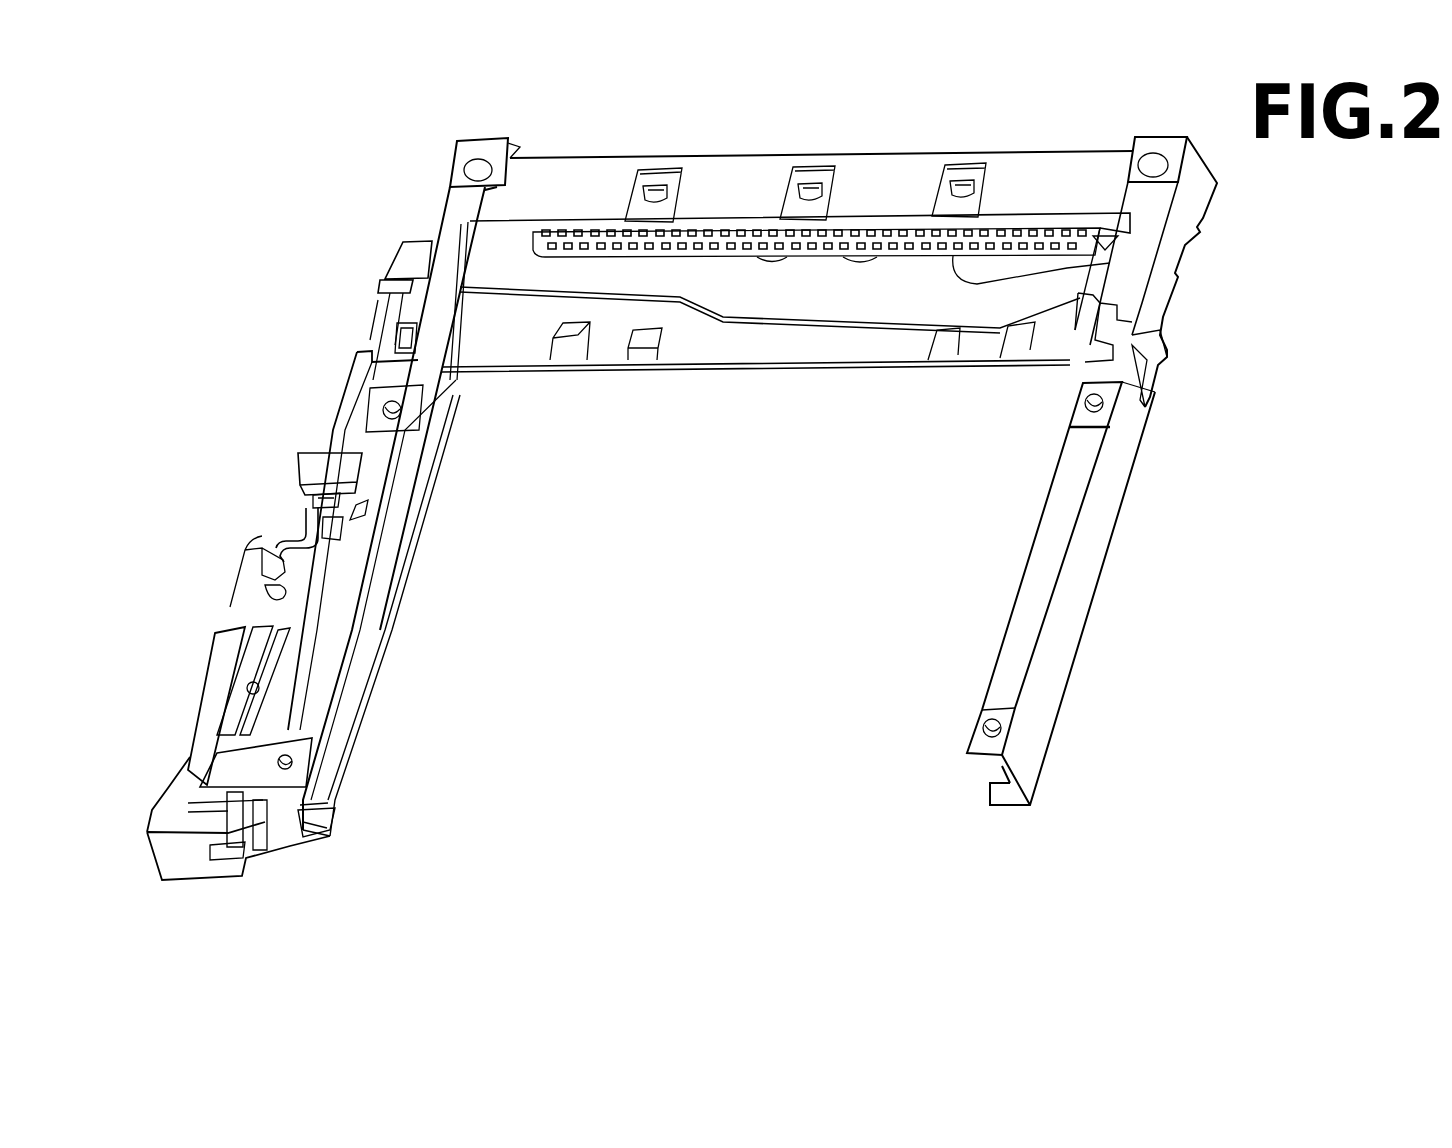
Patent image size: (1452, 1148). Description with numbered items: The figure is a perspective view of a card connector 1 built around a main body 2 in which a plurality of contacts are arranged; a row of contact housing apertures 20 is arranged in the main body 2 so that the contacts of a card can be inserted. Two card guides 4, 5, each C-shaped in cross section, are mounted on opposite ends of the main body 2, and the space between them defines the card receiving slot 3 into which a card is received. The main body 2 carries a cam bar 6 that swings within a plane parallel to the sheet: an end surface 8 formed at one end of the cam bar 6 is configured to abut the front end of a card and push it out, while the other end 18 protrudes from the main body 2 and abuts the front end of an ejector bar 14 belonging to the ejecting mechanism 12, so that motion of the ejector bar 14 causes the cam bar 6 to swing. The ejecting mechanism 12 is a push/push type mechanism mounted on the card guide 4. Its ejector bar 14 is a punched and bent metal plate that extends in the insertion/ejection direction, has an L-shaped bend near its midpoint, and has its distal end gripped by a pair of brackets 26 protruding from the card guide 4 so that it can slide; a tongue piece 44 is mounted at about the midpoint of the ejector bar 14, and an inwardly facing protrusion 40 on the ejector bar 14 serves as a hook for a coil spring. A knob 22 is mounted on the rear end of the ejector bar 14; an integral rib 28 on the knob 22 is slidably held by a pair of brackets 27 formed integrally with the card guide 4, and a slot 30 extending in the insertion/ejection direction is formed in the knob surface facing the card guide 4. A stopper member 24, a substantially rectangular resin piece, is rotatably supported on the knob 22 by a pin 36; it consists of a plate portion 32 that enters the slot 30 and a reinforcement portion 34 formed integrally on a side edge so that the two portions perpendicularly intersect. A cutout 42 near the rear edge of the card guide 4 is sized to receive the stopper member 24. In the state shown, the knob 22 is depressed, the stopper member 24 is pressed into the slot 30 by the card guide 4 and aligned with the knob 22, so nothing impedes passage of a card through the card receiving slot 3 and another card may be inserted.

The connector 1 is at (328, 216).
The main body 2 is at (730, 186).
The card receiving slot 3 is at (688, 681).
The card guide 4 is at (345, 582).
The card guide 5 is at (1020, 578).
The cam bar 6 is at (832, 304).
The end surface 8 is at (1088, 306).
The ejecting mechanism 12 is at (260, 466).
The ejector bar 14 is at (352, 387).
The other end of the cam bar 18 is at (413, 263).
The contact housing apertures 20 is at (572, 234).
The knob 22 is at (200, 722).
The stopper member 24 is at (272, 853).
The brackets 26 is at (320, 462).
The brackets 27 is at (223, 770).
The rib 28 is at (255, 715).
The slot 30 is at (258, 848).
The plate portion 32 is at (240, 846).
The reinforcement portion 34 is at (270, 811).
The pin 36 is at (250, 685).
The protrusion 40 is at (258, 597).
The cutout 42 is at (288, 686).
The tongue piece 44 is at (353, 528).